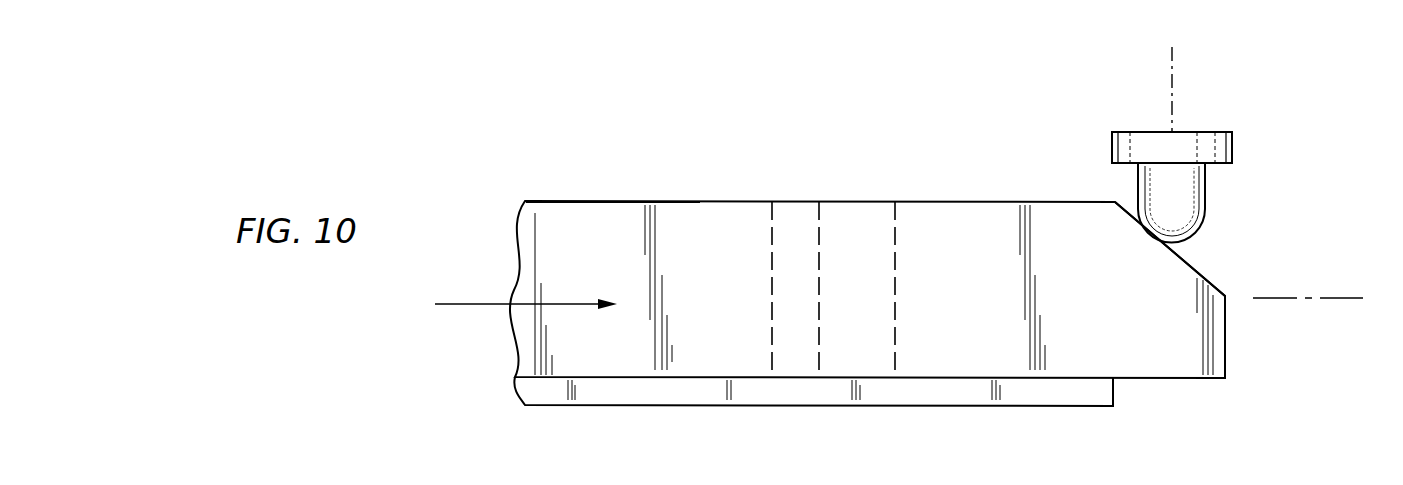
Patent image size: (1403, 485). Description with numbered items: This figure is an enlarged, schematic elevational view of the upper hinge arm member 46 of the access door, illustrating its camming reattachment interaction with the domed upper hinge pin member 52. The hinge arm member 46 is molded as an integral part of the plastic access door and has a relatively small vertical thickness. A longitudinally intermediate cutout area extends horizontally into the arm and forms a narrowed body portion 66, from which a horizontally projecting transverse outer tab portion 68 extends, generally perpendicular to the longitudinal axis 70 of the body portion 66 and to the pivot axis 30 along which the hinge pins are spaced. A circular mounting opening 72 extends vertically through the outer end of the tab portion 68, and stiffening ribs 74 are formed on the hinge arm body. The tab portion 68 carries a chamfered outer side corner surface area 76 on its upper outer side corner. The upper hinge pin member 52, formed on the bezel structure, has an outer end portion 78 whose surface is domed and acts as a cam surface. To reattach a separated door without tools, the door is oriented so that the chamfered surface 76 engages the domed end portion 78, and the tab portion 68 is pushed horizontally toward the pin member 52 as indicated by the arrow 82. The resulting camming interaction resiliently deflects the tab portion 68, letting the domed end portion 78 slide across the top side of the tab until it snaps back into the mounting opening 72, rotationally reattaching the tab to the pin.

The pivot axis 30 is at (1174, 60).
The upper hinge arm member 46 is at (690, 190).
The upper hinge pin member 52 is at (1214, 187).
The narrowed body portion 66 is at (562, 208).
The transverse outer tab portion 68 is at (772, 208).
The longitudinal axis 70 is at (1325, 300).
The circular mounting opening 72 is at (895, 287).
The stiffening ribs 74 is at (690, 393).
The chamfered outer side corner surface area 76 is at (1199, 270).
The outer end portion 78 is at (1201, 230).
The arrow 82 is at (488, 306).